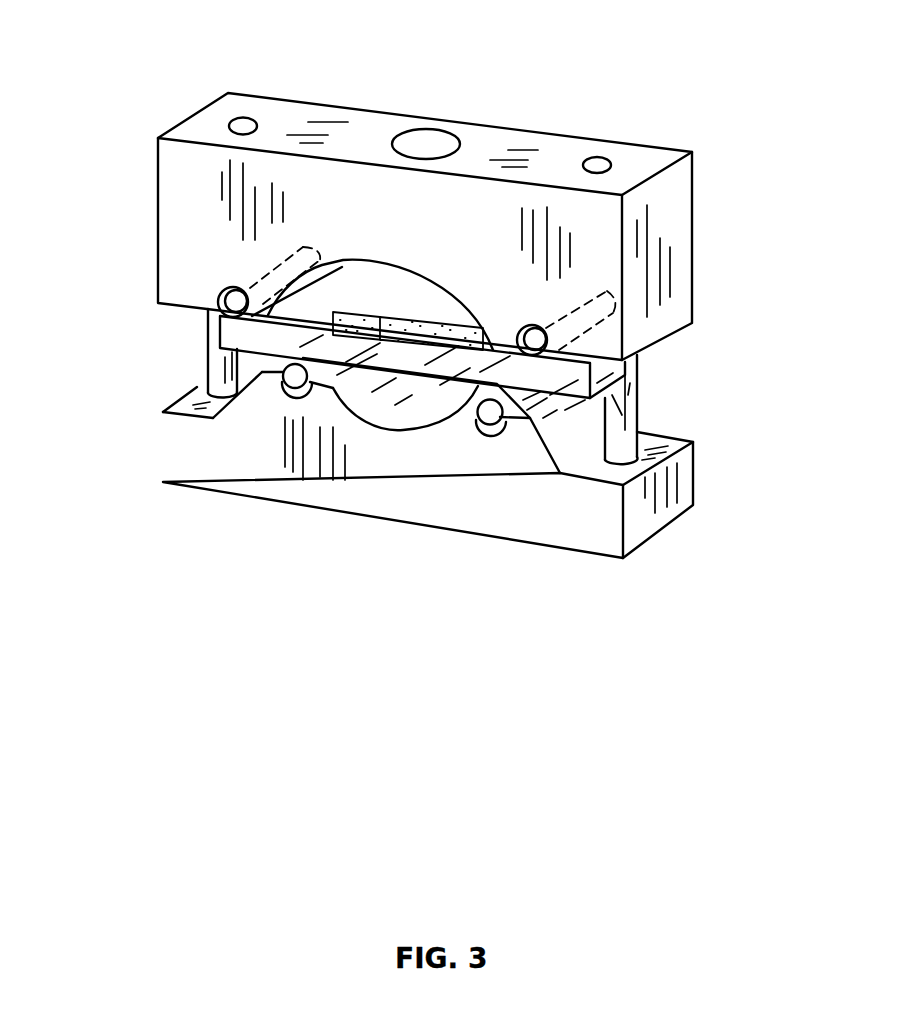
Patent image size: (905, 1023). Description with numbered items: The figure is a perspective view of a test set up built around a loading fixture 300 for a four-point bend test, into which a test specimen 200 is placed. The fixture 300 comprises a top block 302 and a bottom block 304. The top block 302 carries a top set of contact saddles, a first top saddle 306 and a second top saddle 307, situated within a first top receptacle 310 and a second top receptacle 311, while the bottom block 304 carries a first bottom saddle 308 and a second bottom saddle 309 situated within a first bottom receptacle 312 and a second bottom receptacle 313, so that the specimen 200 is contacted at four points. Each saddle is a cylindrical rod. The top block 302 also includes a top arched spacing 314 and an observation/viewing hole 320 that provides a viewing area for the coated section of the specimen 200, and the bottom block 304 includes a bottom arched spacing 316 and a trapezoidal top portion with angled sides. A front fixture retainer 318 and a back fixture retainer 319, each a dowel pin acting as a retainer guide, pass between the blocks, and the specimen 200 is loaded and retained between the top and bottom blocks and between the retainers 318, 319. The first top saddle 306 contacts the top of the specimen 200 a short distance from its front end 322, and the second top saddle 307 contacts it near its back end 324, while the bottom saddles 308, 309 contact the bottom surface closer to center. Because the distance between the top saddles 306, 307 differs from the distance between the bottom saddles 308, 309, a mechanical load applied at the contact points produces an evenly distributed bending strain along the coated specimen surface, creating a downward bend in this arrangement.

The fixture 300 is at (255, 88).
The top block 302 is at (677, 264).
The bottom block 304 is at (685, 481).
The first top saddle 306 is at (527, 339).
The second top saddle 307 is at (230, 301).
The first bottom saddle 308 is at (487, 426).
The second bottom saddle 309 is at (285, 393).
The first top receptacle 310 is at (572, 303).
The second top receptacle 311 is at (228, 287).
The first bottom receptacle 312 is at (500, 426).
The second bottom receptacle 313 is at (298, 392).
The top arched spacing 314 is at (398, 283).
The bottom arched spacing 316 is at (397, 426).
The front fixture retainer 318 is at (633, 414).
The back fixture retainer 319 is at (208, 365).
The observation/viewing hole 320 is at (424, 141).
The front end 322 is at (621, 372).
The back end 324 is at (220, 330).
The test specimen 200 is at (419, 360).